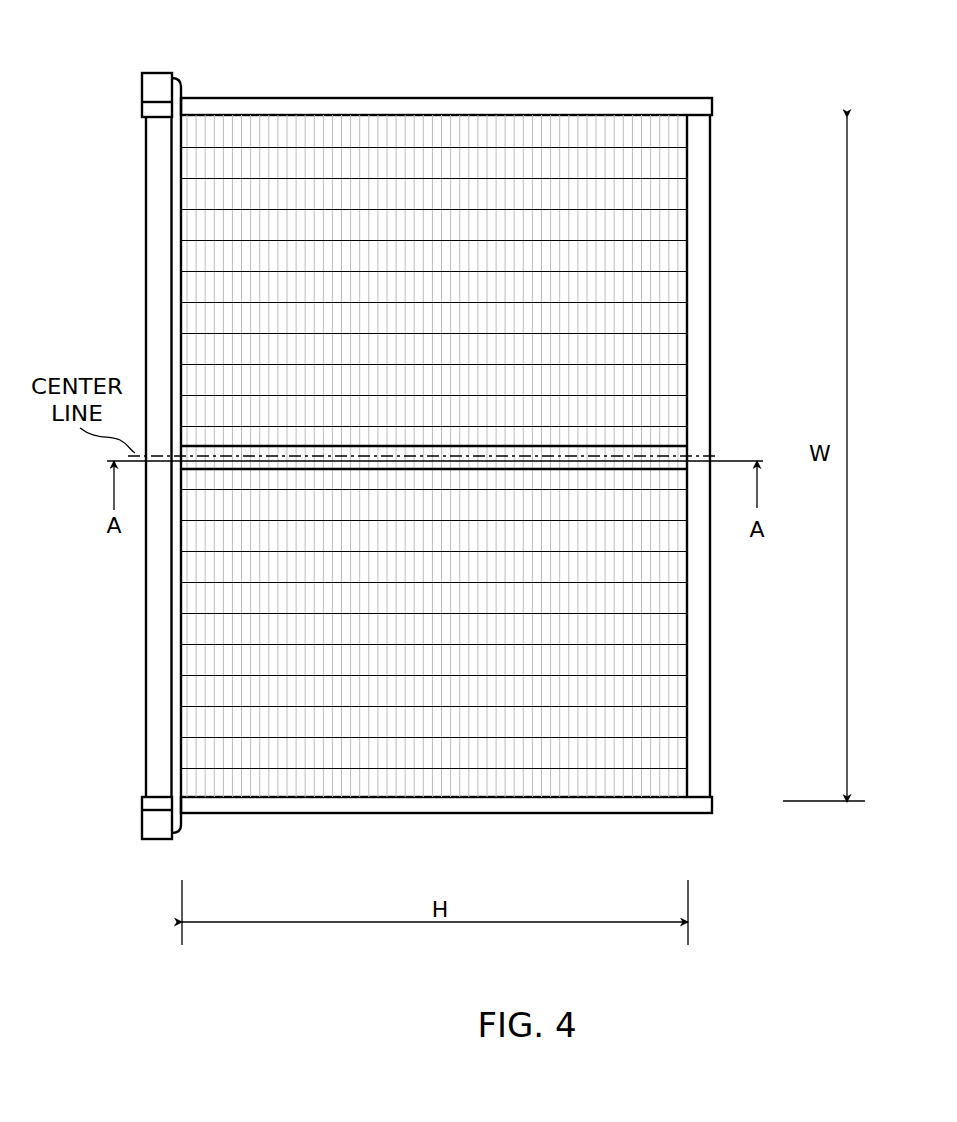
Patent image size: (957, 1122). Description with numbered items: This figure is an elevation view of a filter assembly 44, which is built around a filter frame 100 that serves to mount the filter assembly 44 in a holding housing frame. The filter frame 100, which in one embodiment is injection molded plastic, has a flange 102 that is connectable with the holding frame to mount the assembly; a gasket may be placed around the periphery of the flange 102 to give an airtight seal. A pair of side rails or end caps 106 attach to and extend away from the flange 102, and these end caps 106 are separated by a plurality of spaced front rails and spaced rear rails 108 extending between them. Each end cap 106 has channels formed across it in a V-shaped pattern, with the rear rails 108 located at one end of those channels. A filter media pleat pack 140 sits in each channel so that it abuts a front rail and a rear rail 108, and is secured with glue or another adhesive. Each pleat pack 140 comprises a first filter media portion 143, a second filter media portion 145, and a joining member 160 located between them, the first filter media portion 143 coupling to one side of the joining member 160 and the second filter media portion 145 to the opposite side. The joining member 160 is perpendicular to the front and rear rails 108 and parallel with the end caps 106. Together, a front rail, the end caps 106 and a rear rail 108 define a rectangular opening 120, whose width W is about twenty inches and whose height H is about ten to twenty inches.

The filter assembly 44 is at (242, 77).
The filter frame 100 is at (146, 155).
The flange 102 is at (153, 748).
The end caps 106 is at (410, 107).
The rear rails 108 is at (700, 278).
The rectangular opening 120 is at (510, 132).
The filter media pleat pack 140 is at (202, 322).
The first filter media portion 143 is at (190, 253).
The second filter media portion 145 is at (193, 662).
The joining member 160 is at (683, 450).